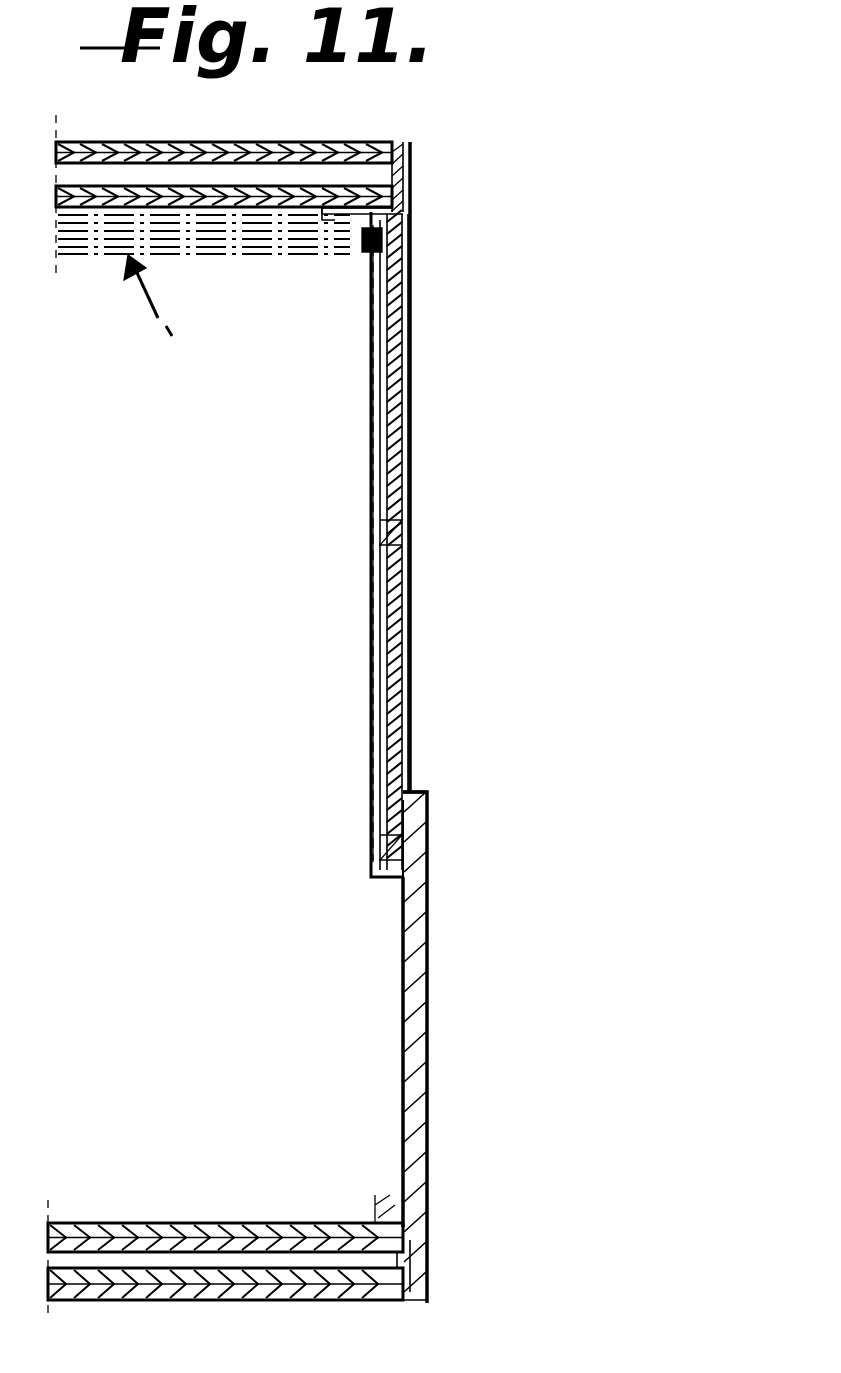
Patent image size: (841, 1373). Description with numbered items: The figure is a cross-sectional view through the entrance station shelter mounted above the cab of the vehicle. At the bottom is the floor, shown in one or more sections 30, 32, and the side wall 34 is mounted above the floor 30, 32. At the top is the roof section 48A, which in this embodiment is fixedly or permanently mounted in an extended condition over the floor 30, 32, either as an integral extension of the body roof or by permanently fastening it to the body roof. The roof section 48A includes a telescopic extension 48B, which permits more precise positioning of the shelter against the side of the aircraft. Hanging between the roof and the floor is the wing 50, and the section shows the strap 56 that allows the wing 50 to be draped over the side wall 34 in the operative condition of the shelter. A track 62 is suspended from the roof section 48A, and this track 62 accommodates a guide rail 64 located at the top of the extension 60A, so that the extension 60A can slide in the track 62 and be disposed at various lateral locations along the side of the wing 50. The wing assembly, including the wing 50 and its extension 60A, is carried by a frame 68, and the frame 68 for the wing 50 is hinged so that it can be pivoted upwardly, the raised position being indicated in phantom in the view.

The floor section 30 is at (342, 1232).
The floor section 32 is at (355, 1280).
The side wall 34 is at (426, 1033).
The roof section 48A is at (365, 142).
The telescopic extension 48B is at (350, 174).
The wing 50 is at (400, 576).
The strap 56 is at (428, 842).
The extension 60A is at (372, 404).
The track 62 is at (370, 237).
The guide rail 64 is at (363, 250).
The frame 68 is at (410, 238).